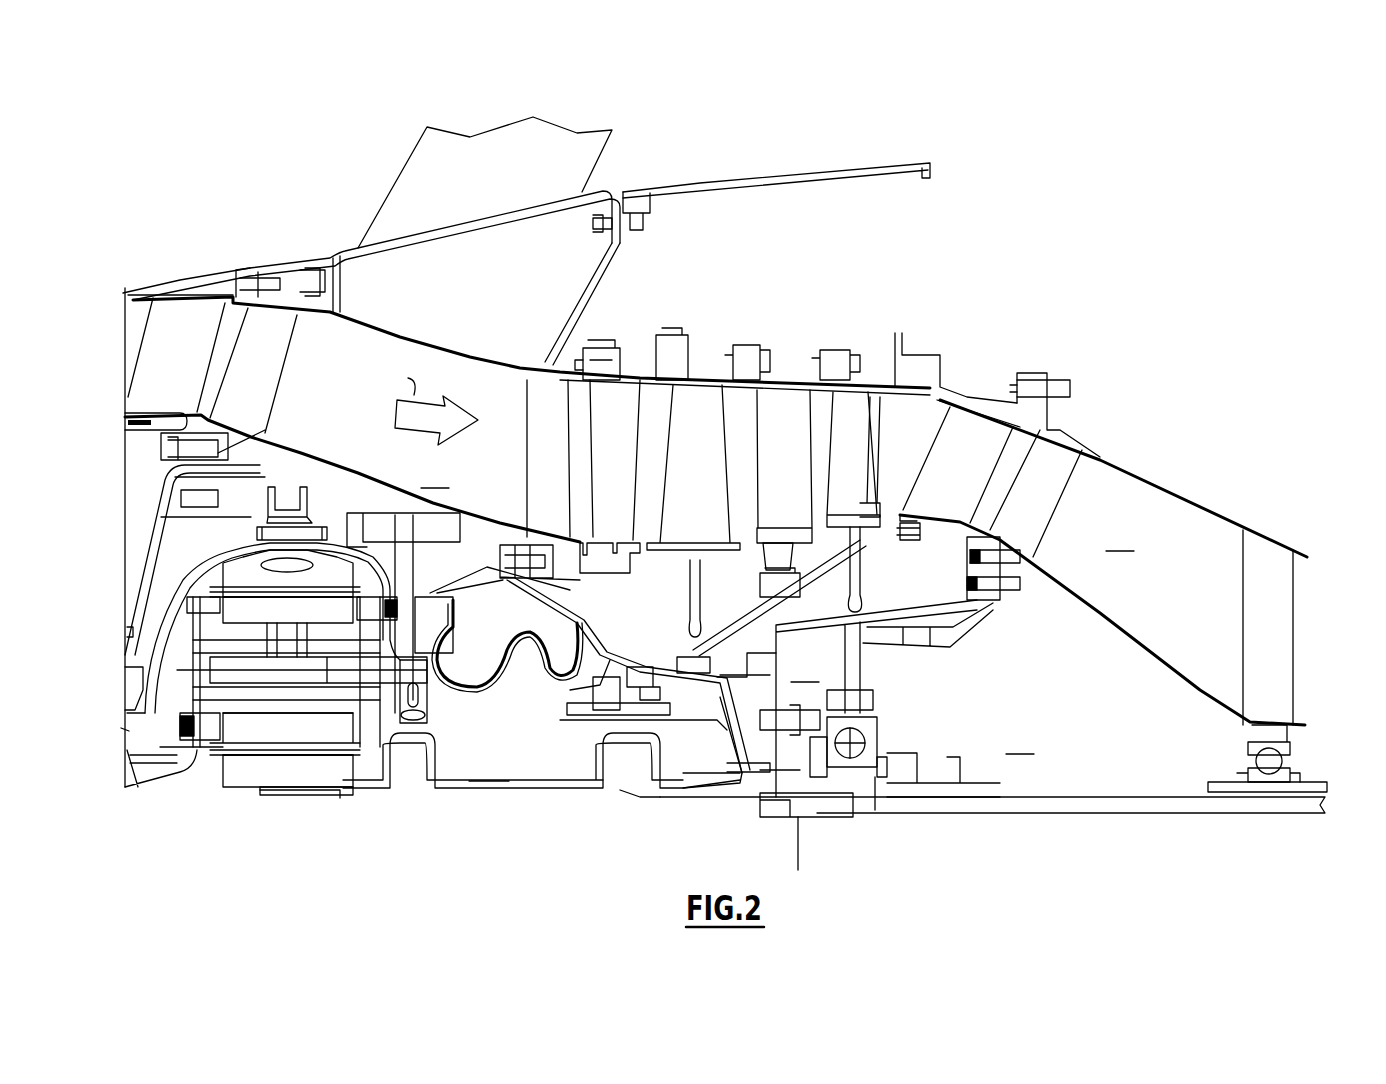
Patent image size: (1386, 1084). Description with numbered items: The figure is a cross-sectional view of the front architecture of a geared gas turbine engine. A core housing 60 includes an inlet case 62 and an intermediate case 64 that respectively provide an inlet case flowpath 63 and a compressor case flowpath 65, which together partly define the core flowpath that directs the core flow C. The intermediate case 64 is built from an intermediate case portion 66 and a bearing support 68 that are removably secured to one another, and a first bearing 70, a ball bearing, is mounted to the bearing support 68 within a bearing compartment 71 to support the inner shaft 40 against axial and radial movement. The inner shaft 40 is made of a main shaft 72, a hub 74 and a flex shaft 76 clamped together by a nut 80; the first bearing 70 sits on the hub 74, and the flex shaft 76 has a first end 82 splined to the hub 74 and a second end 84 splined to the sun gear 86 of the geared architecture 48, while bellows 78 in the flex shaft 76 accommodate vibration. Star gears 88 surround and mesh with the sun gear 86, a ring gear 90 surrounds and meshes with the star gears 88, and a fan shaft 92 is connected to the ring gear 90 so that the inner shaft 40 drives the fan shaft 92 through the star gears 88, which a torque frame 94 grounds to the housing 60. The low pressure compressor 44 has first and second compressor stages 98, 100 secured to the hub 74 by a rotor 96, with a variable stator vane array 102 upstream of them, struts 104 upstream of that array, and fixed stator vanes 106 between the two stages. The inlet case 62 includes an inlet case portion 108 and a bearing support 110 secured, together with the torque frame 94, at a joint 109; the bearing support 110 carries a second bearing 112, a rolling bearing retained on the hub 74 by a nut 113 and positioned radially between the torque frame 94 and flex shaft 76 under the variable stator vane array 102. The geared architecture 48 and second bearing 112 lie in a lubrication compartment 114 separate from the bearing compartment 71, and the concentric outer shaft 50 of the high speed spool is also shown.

The inner shaft 40 is at (1083, 819).
The low pressure compressor 44 is at (897, 308).
The geared architecture 48 is at (375, 822).
The outer shaft 50 is at (1315, 780).
The core housing 60 is at (633, 258).
The inlet case 62 is at (440, 333).
The inlet case flowpath 63 is at (435, 474).
The intermediate case 64 is at (1112, 453).
The compressor case flowpath 65 is at (1098, 566).
The intermediate case portion 66 is at (1083, 605).
The bearing support 68 is at (957, 642).
The first bearing 70 is at (875, 780).
The bearing compartment 71 is at (875, 698).
The main shaft 72 is at (997, 808).
The hub 74 is at (770, 772).
The flex shaft 76 is at (670, 798).
The bellows 78 is at (617, 745).
The nut 80 is at (823, 820).
The first end 82 is at (770, 800).
The second end 84 is at (313, 795).
The sun gear 86 is at (263, 775).
The star gears 88 is at (262, 707).
The ring gear 90 is at (320, 575).
The fan shaft 92 is at (157, 624).
The torque frame 94 is at (440, 700).
The rotor 96 is at (790, 615).
The first compressor stage 98 is at (703, 370).
The second compressor stage 100 is at (866, 370).
The variable stator vane array 102 is at (630, 393).
The struts 104 is at (516, 396).
The fixed stator vanes 106 is at (785, 403).
The inlet case portion 108 is at (373, 463).
The joint 109 is at (513, 523).
The bearing support 110 is at (588, 630).
The second bearing 112 is at (578, 690).
The nut 113 is at (580, 722).
The lubrication compartment 114 is at (541, 760).
The core flow C is at (435, 403).